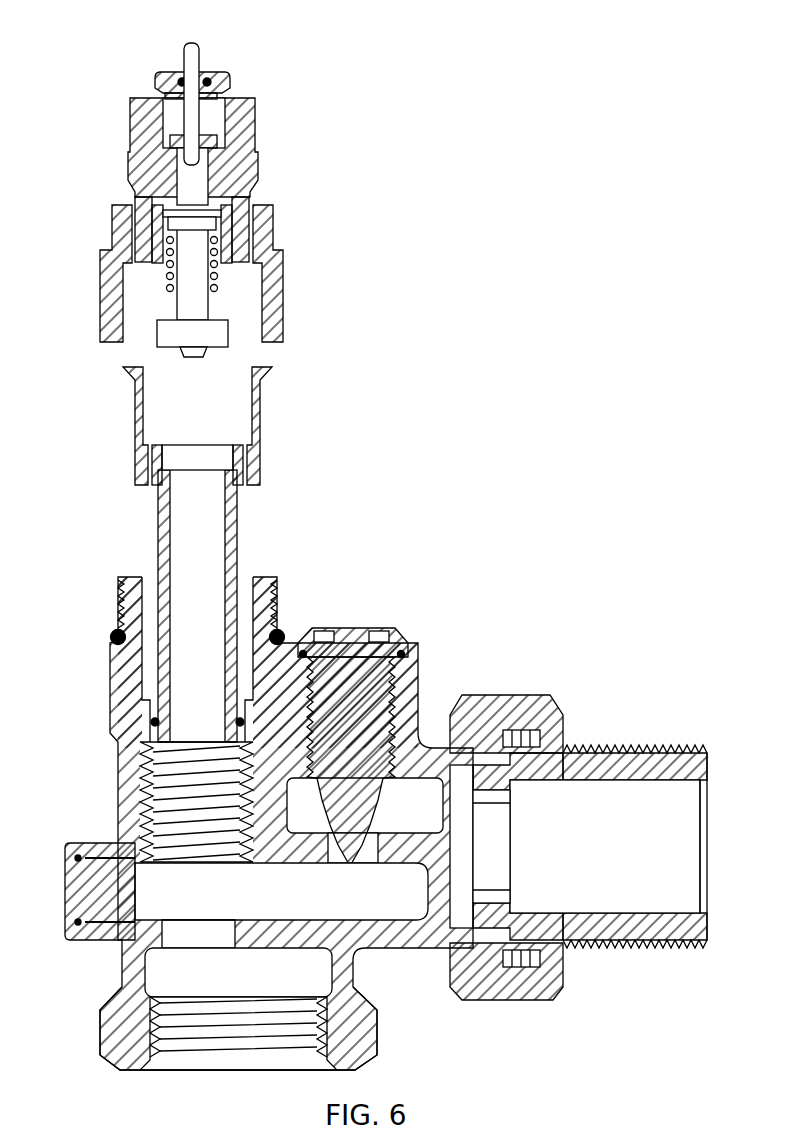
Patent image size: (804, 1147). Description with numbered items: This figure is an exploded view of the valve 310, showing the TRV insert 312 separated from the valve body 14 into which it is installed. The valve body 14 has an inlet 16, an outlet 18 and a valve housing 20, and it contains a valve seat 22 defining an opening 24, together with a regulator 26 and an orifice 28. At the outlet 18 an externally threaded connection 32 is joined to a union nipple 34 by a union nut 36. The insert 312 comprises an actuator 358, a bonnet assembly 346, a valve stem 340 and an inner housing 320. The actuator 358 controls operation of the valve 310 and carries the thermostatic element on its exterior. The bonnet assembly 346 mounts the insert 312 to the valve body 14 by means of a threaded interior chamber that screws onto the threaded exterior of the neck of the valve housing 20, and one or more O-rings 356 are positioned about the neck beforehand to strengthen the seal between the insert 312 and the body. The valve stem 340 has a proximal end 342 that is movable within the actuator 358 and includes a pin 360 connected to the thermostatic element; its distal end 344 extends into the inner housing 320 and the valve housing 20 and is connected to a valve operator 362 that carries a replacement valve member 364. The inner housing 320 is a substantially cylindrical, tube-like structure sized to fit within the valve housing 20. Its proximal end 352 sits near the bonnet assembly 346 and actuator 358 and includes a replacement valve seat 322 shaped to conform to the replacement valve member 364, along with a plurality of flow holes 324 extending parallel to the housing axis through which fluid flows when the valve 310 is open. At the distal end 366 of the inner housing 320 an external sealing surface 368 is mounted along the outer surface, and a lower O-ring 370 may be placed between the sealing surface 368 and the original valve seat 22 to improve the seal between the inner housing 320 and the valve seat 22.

The valve 310 is at (478, 228).
The TRV insert 312 is at (322, 180).
The pin 360 is at (190, 44).
The actuator 358 is at (255, 140).
The proximal end 342 is at (197, 240).
The valve stem 340 is at (195, 290).
The distal end 344 is at (197, 318).
The bonnet assembly 346 is at (285, 322).
The valve operator 362 is at (218, 333).
The replacement valve member 364 is at (217, 350).
The proximal end 352 is at (189, 426).
The replacement valve seat 322 is at (155, 442).
The flow holes 324 is at (135, 460).
The inner housing 320 is at (160, 538).
The O-rings 356 is at (116, 630).
The regulator 26 is at (400, 627).
The distal end 366 is at (160, 696).
The valve housing 20 is at (82, 682).
The external sealing surface 368 is at (150, 718).
The lower O-ring 370 is at (147, 768).
The union nut 36 is at (482, 697).
The union nipple 34 is at (525, 735).
The outlet 18 is at (715, 835).
The valve seat 22 is at (128, 958).
The opening 24 is at (197, 955).
The inlet 16 is at (214, 1083).
The orifice 28 is at (352, 875).
The valve body 14 is at (413, 950).
The externally threaded connection 32 is at (485, 1002).